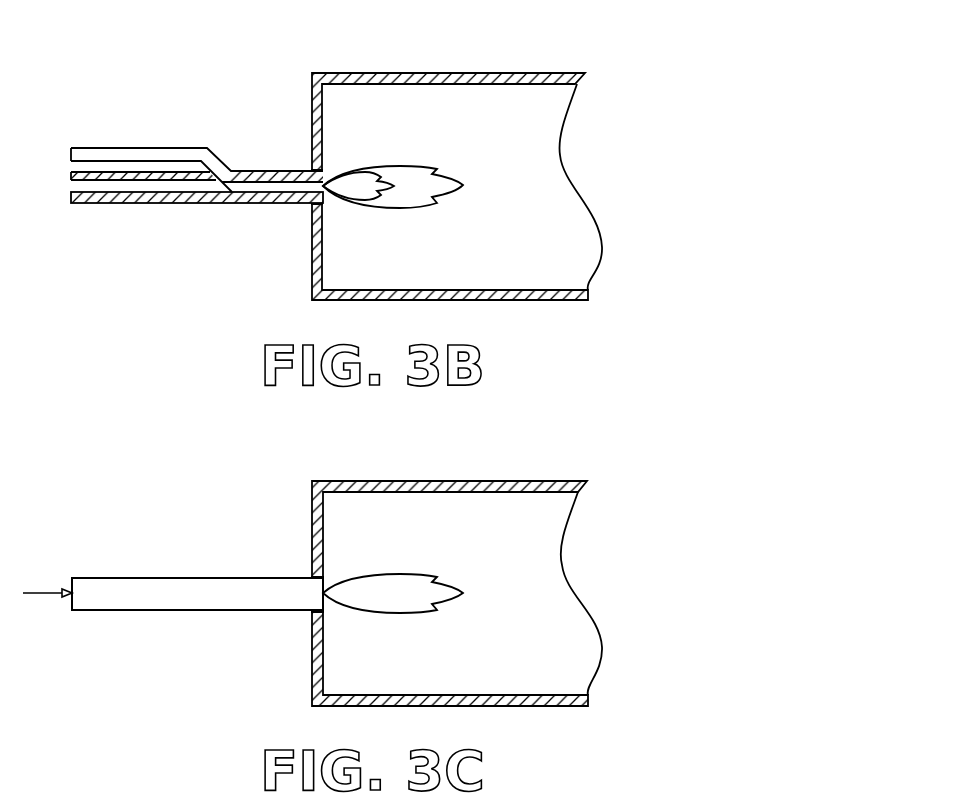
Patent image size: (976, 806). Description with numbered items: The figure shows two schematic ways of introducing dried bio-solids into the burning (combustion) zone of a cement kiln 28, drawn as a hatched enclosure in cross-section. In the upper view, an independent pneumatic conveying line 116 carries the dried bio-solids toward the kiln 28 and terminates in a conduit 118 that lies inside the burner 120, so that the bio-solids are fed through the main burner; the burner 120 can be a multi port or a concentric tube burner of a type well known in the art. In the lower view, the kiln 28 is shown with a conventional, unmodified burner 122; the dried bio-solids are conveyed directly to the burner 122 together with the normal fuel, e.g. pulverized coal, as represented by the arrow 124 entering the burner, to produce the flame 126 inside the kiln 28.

In FIG. 3B, the kiln 28 is at (481, 73).
In FIG. 3C, the kiln 28 is at (418, 481).
In FIG. 3B, the independent pneumatic conveying line 116 is at (137, 147).
In FIG. 3B, the conduit 118 is at (298, 193).
In FIG. 3B, the burner 120 is at (273, 170).
In FIG. 3C, the burner 122 is at (247, 578).
In FIG. 3C, the arrow 124 is at (38, 592).
In FIG. 3C, the flame 126 is at (402, 573).